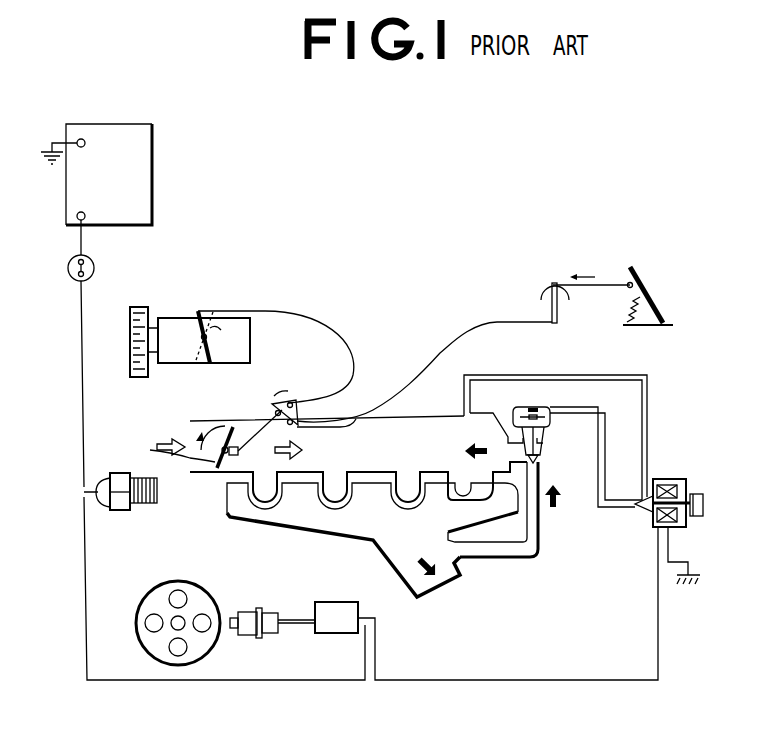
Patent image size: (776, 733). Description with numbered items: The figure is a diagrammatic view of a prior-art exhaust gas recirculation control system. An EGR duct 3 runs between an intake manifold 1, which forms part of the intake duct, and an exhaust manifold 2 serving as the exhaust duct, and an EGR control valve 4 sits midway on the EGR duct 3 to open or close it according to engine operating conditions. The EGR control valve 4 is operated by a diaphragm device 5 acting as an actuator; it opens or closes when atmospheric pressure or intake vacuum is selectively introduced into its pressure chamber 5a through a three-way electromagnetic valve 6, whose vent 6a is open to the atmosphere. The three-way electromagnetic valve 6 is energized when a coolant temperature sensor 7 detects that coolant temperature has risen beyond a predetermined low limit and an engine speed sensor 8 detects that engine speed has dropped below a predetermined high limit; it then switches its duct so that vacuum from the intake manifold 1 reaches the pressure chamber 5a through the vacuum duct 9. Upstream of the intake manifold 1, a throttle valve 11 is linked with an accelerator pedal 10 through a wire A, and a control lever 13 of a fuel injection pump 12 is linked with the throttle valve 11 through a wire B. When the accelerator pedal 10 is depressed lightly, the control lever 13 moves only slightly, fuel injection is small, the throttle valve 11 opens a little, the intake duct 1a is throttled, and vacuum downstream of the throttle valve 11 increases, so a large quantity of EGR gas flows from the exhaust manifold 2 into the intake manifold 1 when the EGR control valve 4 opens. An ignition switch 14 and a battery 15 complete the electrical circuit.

The intake manifold 1 is at (434, 428).
The intake duct 1a is at (205, 478).
The exhaust manifold 2 is at (388, 538).
The EGR duct 3 is at (537, 558).
The EGR control valve 4 is at (545, 454).
The diaphragm device 5 is at (518, 404).
The pressure chamber 5a is at (536, 402).
The three-way electromagnetic valve 6 is at (683, 478).
The vent 6a is at (705, 506).
The coolant temperature sensor 7 is at (120, 507).
The engine speed sensor 8 is at (245, 612).
The vacuum duct 9 is at (650, 399).
The accelerator pedal 10 is at (655, 300).
The throttle valve 11 is at (211, 429).
The fuel injection pump 12 is at (172, 316).
The control lever 13 is at (203, 309).
The ignition switch 14 is at (68, 270).
The battery 15 is at (153, 178).
The wire A is at (463, 330).
The wire B is at (308, 318).